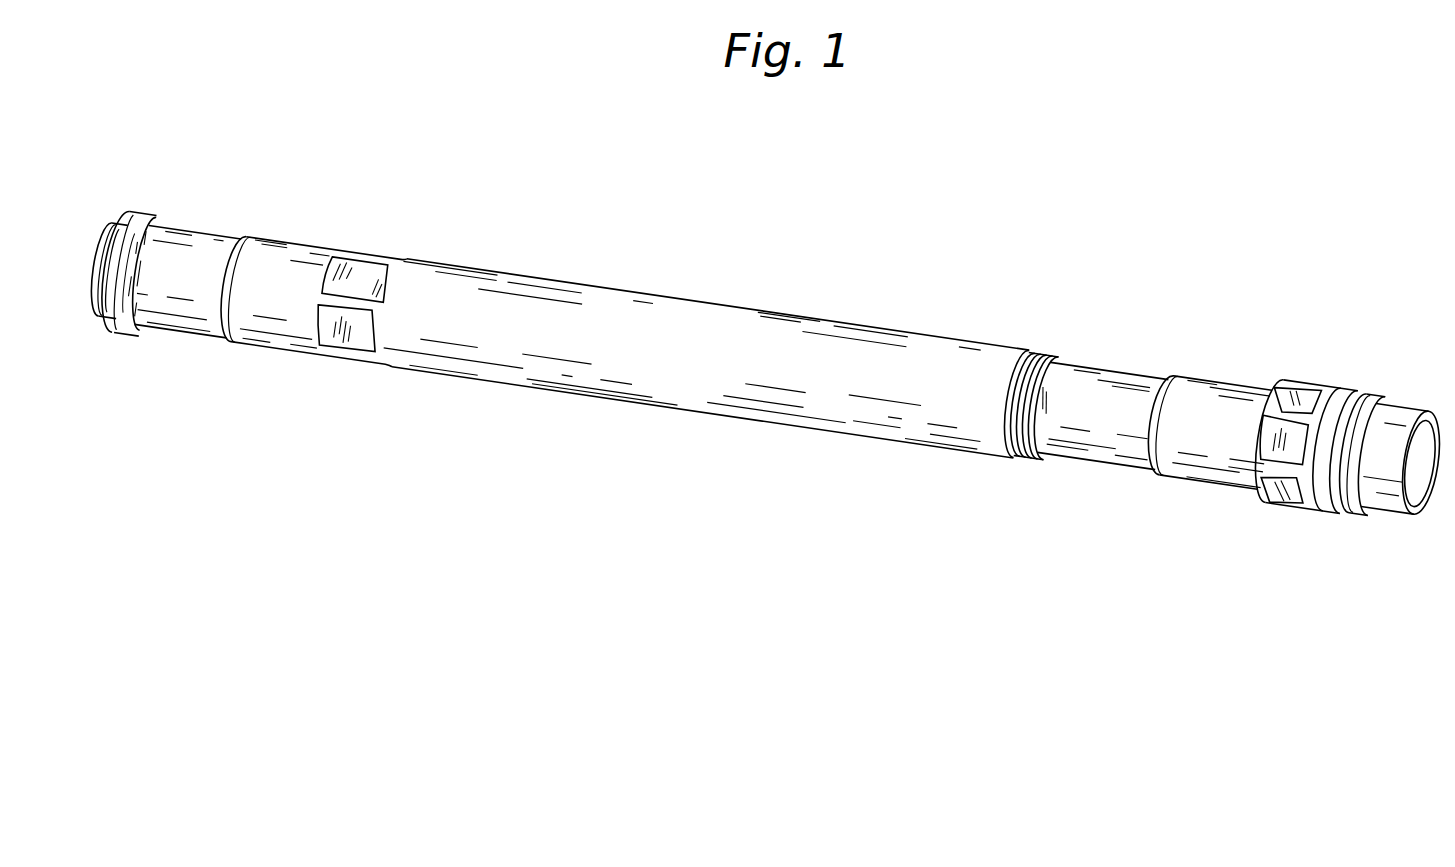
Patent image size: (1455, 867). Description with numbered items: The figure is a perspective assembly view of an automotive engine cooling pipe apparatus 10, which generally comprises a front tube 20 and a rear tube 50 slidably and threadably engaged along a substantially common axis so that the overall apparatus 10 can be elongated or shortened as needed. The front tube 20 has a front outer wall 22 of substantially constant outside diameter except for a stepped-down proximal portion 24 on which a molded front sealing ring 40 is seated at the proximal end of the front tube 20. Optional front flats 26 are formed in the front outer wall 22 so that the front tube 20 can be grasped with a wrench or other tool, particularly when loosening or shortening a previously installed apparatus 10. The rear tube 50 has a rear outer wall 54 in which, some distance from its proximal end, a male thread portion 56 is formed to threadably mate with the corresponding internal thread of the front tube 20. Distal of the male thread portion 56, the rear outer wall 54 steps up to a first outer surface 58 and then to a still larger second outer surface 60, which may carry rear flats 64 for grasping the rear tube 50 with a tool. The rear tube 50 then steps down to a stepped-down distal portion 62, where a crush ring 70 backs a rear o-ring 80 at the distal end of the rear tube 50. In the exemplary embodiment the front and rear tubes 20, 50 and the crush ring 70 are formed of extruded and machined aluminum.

The automotive engine cooling pipe apparatus 10 is at (878, 230).
The front tube 20 is at (543, 222).
The front outer wall 22 is at (617, 307).
The stepped-down proximal portion 24 is at (195, 237).
The front flats 26 is at (355, 267).
The front sealing ring 40 is at (124, 332).
The rear tube 50 is at (1211, 305).
The rear outer wall 54 is at (1107, 382).
The male thread portion 56 is at (1047, 352).
The first outer surface 58 is at (1180, 472).
The second outer surface 60 is at (1330, 397).
The stepped-down distal portion 62 is at (1400, 412).
The rear flats 64 is at (1273, 497).
The crush ring 70 is at (1333, 517).
The rear o-ring 80 is at (1373, 517).